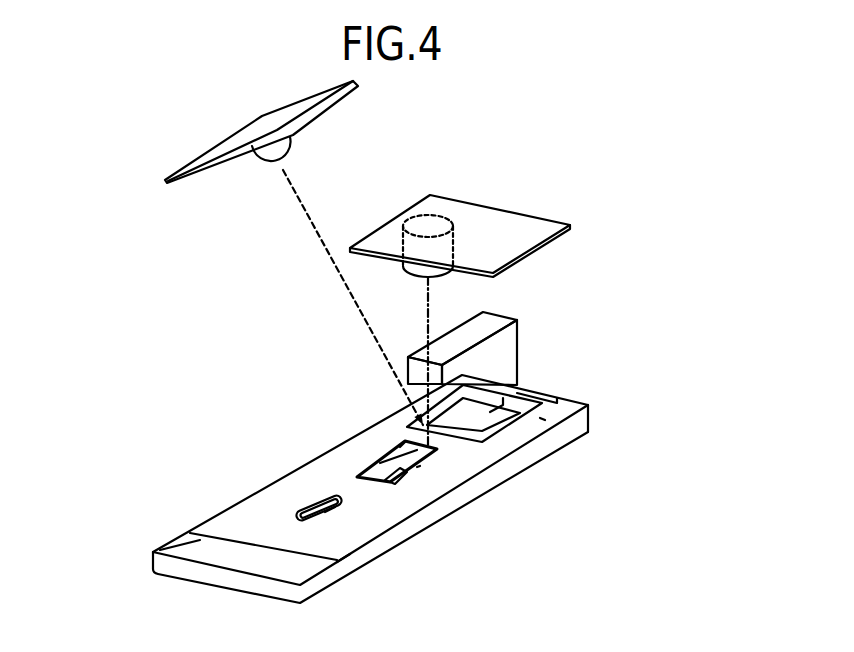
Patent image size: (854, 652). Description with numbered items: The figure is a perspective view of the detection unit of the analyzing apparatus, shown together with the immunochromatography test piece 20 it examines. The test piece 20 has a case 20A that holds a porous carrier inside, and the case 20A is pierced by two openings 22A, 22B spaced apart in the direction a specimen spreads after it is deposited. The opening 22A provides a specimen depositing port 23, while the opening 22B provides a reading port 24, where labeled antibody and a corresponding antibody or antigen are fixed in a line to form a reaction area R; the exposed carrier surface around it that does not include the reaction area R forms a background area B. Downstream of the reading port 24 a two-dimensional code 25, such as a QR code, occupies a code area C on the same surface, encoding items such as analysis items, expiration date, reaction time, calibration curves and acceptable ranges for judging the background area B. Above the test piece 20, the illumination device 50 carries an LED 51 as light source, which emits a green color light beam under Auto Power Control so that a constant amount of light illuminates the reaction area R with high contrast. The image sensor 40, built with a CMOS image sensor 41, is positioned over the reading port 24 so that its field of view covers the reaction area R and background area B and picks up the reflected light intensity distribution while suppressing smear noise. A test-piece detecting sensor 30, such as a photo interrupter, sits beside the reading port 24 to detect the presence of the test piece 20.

The illumination device 50 is at (150, 180).
The LED 51 is at (268, 165).
The image sensor 40 is at (580, 201).
The CMOS image sensor 41 is at (433, 227).
The test-piece detecting sensor 30 is at (526, 332).
The two-dimensional code 25 is at (520, 388).
The immunochromatography test piece 20 is at (604, 420).
The case 20A is at (207, 528).
The specimen depositing port 23 is at (300, 502).
The reading port 24 is at (374, 457).
The opening 22A is at (330, 505).
The opening 22B is at (403, 470).
The background area B is at (403, 442).
The code area C is at (524, 431).
The reaction area R is at (420, 469).